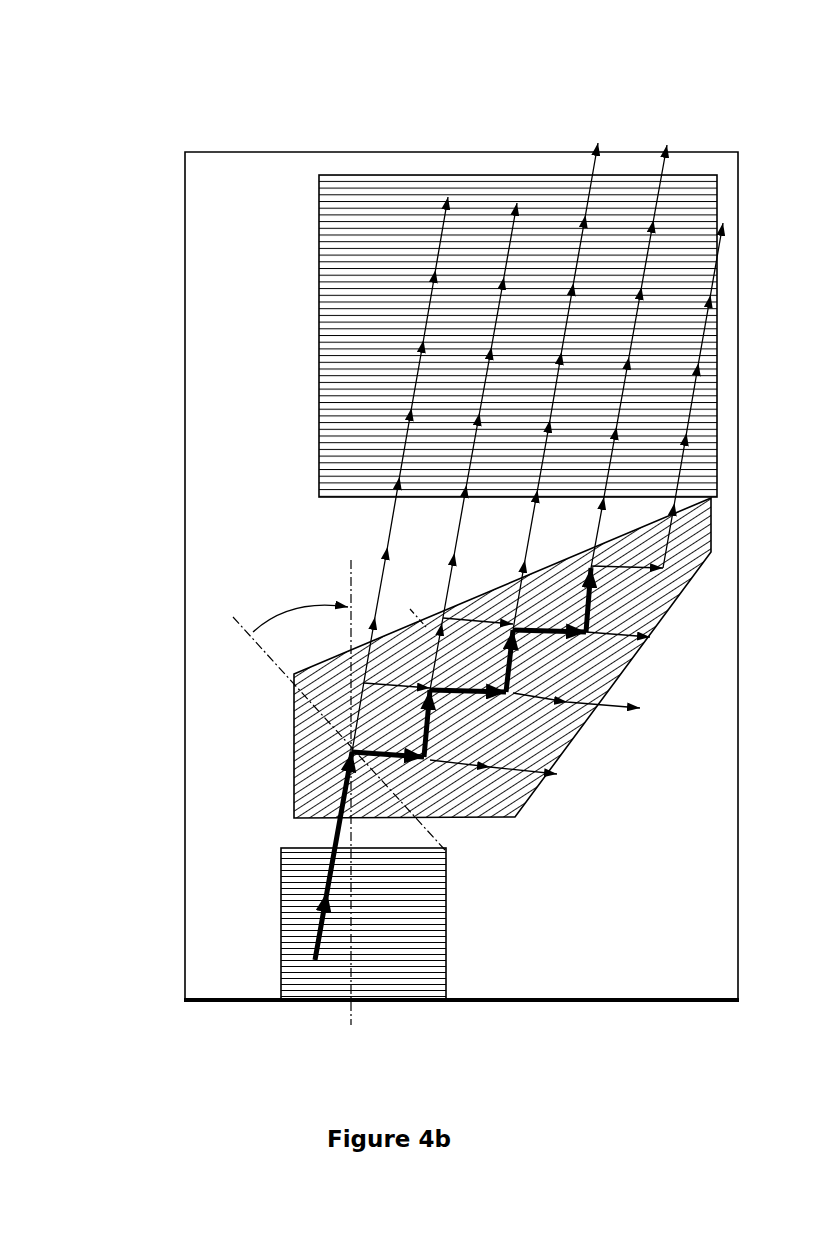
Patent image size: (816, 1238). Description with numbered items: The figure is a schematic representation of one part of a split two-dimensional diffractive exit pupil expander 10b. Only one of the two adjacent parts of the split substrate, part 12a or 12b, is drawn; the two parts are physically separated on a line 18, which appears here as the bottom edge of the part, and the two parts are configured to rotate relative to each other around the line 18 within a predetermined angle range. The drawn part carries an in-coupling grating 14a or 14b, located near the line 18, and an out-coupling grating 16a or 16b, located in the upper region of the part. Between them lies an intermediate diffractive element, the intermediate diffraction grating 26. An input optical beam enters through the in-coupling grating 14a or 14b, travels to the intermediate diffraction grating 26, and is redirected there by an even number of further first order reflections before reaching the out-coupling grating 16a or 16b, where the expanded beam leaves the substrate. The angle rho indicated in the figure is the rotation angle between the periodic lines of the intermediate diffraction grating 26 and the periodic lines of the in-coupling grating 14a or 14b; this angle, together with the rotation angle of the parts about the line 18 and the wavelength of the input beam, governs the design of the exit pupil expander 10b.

The split two-dimensional diffractive exit pupil expander 10b is at (613, 107).
The adjacent part 12a is at (461, 535).
The adjacent part 12b is at (288, 151).
The in-coupling grating 14a is at (439, 924).
The in-coupling grating 14b is at (439, 924).
The out-coupling grating 16a is at (371, 336).
The out-coupling grating 16b is at (371, 336).
The line 18 is at (475, 1003).
The intermediate diffraction grating 26 is at (295, 783).